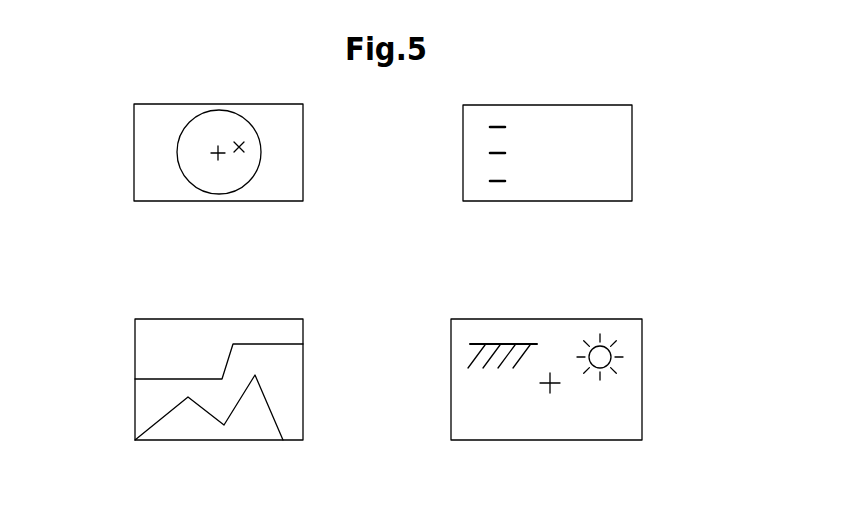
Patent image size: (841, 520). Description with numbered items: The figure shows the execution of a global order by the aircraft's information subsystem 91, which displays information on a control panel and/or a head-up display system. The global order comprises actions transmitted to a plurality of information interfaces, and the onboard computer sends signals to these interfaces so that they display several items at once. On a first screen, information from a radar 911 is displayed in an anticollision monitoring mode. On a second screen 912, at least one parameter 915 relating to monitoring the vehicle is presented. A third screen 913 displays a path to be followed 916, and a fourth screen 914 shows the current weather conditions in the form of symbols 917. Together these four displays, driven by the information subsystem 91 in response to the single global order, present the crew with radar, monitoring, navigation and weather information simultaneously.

The information subsystem 91 is at (687, 87).
The radar 911 is at (134, 155).
The second screen 912 is at (583, 201).
The third screen 913 is at (135, 358).
The fourth screen 914 is at (583, 440).
The parameter 915 is at (530, 112).
The path to be followed 916 is at (263, 344).
The symbols 917 is at (597, 343).